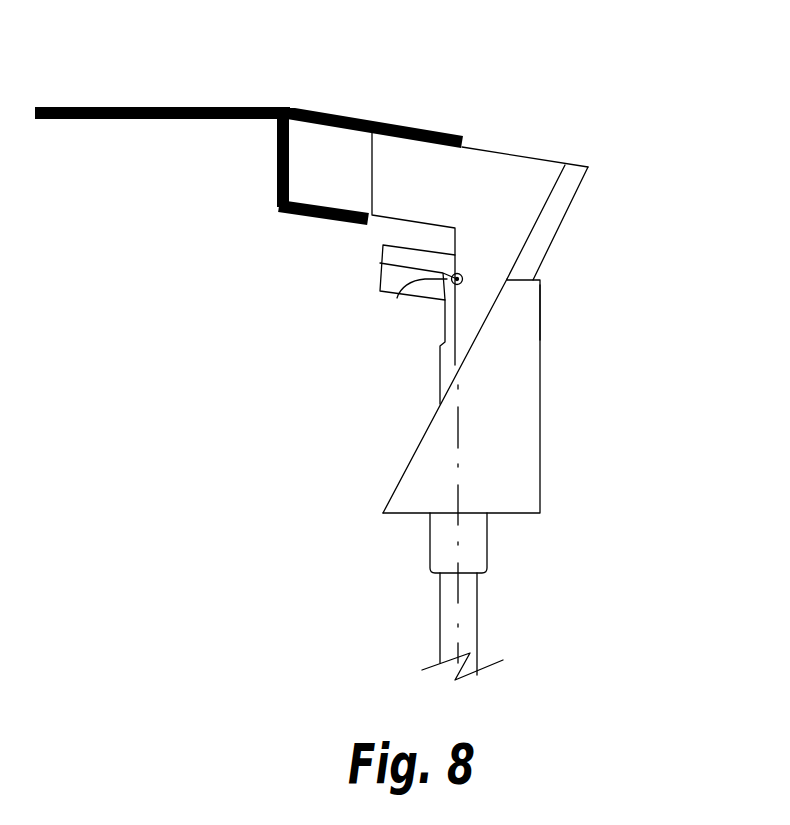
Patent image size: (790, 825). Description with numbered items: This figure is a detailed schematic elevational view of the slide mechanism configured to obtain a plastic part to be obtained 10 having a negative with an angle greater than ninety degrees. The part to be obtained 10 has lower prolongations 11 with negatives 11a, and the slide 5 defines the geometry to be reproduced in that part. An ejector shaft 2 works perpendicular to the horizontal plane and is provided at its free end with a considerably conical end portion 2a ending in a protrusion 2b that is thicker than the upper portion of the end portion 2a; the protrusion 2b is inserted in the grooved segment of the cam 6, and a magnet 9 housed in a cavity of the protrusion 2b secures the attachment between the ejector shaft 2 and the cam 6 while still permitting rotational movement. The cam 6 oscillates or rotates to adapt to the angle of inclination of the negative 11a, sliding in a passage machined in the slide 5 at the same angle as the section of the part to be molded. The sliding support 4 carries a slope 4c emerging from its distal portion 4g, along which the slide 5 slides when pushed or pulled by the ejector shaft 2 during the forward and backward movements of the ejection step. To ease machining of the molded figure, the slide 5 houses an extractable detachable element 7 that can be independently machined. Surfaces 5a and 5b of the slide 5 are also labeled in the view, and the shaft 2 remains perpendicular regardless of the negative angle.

The ejector shaft 2 is at (467, 597).
The conical end portion 2a is at (438, 330).
The protrusion 2b is at (380, 255).
The sliding support 4 is at (508, 398).
The slope 4c is at (420, 438).
The distal portion 4g is at (535, 325).
The slide 5 is at (513, 188).
The outer surface of plate 5a is at (550, 246).
The upper edge of plate 5b is at (512, 153).
The cam 6 is at (392, 278).
The detachable element 7 is at (408, 162).
The magnet 9 is at (413, 283).
The part to be obtained 10 is at (160, 120).
The lower prolongations 11 is at (277, 160).
The negatives 11a is at (300, 212).